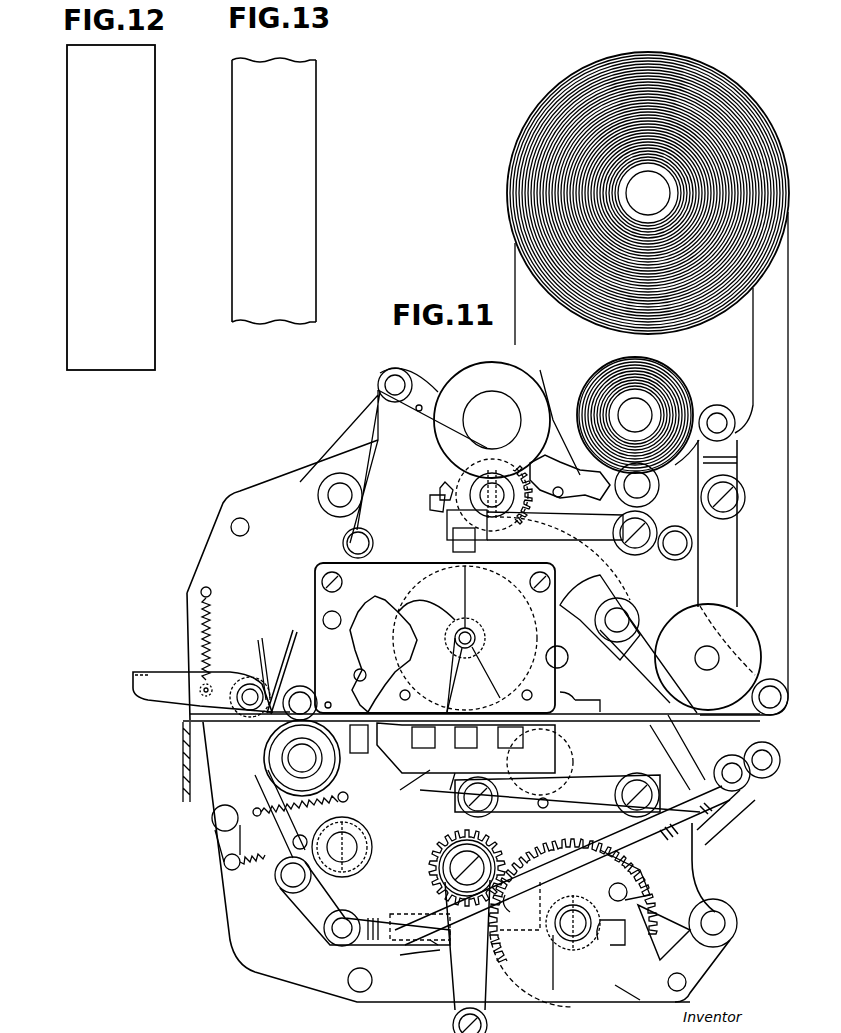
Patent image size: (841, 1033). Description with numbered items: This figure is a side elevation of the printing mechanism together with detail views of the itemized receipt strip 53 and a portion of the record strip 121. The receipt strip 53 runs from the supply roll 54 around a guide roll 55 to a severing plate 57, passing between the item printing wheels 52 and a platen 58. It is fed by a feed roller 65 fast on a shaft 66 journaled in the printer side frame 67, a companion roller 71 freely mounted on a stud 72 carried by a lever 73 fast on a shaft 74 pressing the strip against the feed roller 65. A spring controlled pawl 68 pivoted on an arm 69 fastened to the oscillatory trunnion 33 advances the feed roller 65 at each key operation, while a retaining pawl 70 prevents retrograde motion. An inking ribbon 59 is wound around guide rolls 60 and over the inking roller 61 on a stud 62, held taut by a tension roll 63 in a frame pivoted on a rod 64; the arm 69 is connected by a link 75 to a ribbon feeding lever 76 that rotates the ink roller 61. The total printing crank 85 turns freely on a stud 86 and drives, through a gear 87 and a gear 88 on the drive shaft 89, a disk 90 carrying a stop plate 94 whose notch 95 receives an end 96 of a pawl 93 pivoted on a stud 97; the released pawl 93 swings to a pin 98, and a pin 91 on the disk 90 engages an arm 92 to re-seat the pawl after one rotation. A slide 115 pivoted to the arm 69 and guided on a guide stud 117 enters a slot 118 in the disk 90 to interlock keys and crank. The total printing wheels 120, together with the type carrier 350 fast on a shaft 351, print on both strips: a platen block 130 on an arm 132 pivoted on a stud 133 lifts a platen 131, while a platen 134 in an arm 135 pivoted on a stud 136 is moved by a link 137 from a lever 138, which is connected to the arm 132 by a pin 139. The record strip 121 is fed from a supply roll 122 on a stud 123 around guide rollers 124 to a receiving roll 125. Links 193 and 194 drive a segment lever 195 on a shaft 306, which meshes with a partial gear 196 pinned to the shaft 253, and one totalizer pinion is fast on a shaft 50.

In FIG. 12, the receipt strip 53 is at (88, 268).
In FIG. 11, the receipt strip 53 is at (598, 715).
In FIG. 13, the record strip 121 is at (316, 255).
In FIG. 11, the record strip 121 is at (368, 446).
In FIG. 11, the supply roll 54 is at (712, 292).
In FIG. 11, the supply roll 122 is at (606, 360).
In FIG. 11, the stud 123 is at (642, 415).
In FIG. 11, the receiving roll 125 is at (487, 400).
In FIG. 11, the guide rollers 124 is at (380, 386).
In FIG. 11, the printer side frame 67 is at (232, 910).
In FIG. 11, the lever 73 is at (180, 690).
In FIG. 11, the shaft 74 is at (248, 688).
In FIG. 11, the severing plate 57 is at (266, 690).
In FIG. 11, the stud 72 is at (283, 702).
In FIG. 11, the companion roller 71 is at (306, 692).
In FIG. 11, the guide rolls 60 is at (316, 578).
In FIG. 11, the total printing wheels 120 is at (412, 630).
In FIG. 11, the shaft 351 is at (472, 632).
In FIG. 11, the type carrier 350 is at (455, 685).
In FIG. 11, the printing wheels 52 is at (376, 640).
In FIG. 11, the rod 64 is at (552, 650).
In FIG. 11, the shaft 50 is at (354, 676).
In FIG. 11, the shaft 253 is at (485, 495).
In FIG. 11, the partial gear 196 is at (440, 502).
In FIG. 11, the platen 134 is at (453, 545).
In FIG. 11, the shaft 306 is at (630, 487).
In FIG. 11, the arm 135 is at (580, 500).
In FIG. 11, the stud 136 is at (644, 535).
In FIG. 11, the link 193 is at (728, 560).
In FIG. 11, the segment lever 195 is at (735, 434).
In FIG. 11, the link 194 is at (737, 462).
In FIG. 11, the tension roll 63 is at (636, 620).
In FIG. 11, the inking roller 61 is at (737, 637).
In FIG. 11, the stud 62 is at (712, 662).
In FIG. 11, the guide roll 55 is at (776, 715).
In FIG. 11, the inking ribbon 59 is at (582, 718).
In FIG. 11, the link 137 is at (648, 706).
In FIG. 11, the pawl 68 is at (270, 750).
In FIG. 11, the feed roller 65 is at (268, 775).
In FIG. 11, the shaft 66 is at (290, 772).
In FIG. 11, the platen block 130 is at (458, 770).
In FIG. 11, the platen 131 is at (470, 745).
In FIG. 11, the platen 58 is at (368, 745).
In FIG. 11, the arm 132 is at (560, 786).
In FIG. 11, the pin 139 is at (550, 800).
In FIG. 11, the stud 133 is at (618, 798).
In FIG. 11, the lever 138 is at (640, 752).
In FIG. 11, the ribbon feeding lever 76 is at (712, 770).
In FIG. 11, the link 75 is at (705, 830).
In FIG. 11, the pawl 93 is at (685, 950).
In FIG. 11, the stud 97 is at (718, 923).
In FIG. 11, the pin 98 is at (687, 985).
In FIG. 11, the retaining pawl 70 is at (230, 843).
In FIG. 11, the trunnion 33 is at (355, 846).
In FIG. 11, the arm 69 is at (328, 904).
In FIG. 11, the stud 86 is at (440, 870).
In FIG. 11, the gear 87 is at (432, 858).
In FIG. 11, the total printing crank 85 is at (445, 990).
In FIG. 11, the slide 115 is at (410, 950).
In FIG. 11, the guide stud 117 is at (440, 942).
In FIG. 11, the drive shaft 89 is at (566, 925).
In FIG. 11, the disk 90 is at (556, 988).
In FIG. 11, the stop plate 94 is at (590, 985).
In FIG. 11, the notch 95 is at (618, 945).
In FIG. 11, the end 96 is at (615, 984).
In FIG. 11, the pin 91 is at (609, 892).
In FIG. 11, the arm 92 is at (650, 912).
In FIG. 11, the gear 88 is at (636, 864).
In FIG. 11, the slot 118 is at (508, 902).